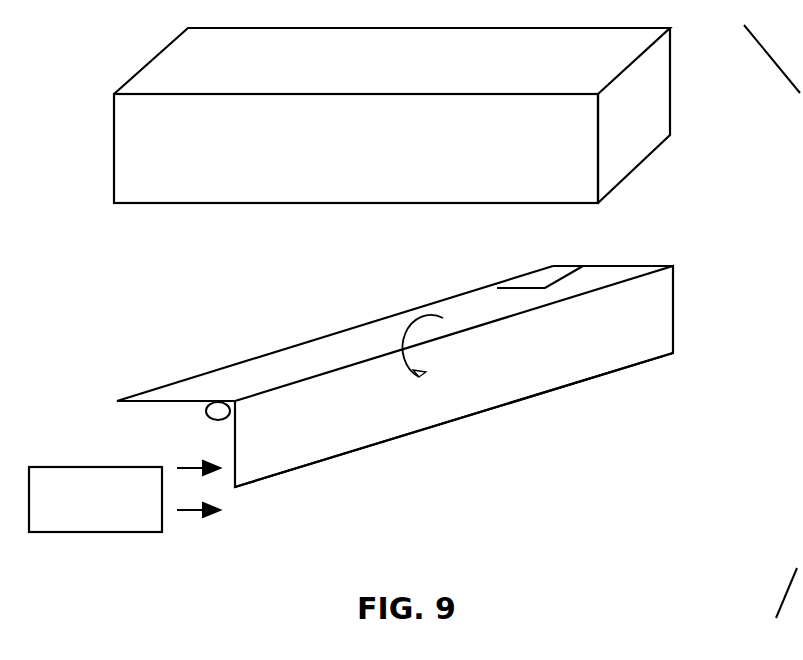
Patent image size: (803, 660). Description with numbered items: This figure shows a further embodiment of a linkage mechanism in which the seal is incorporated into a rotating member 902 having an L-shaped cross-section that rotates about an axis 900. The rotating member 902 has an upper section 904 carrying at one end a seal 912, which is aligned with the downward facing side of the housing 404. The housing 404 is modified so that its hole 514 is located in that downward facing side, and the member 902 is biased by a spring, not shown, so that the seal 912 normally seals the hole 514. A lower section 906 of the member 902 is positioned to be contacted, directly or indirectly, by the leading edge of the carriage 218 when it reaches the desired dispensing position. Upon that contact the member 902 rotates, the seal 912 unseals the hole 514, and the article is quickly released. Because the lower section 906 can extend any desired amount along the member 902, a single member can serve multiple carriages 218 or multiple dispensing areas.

The housing 404 is at (183, 203).
The hole 514 is at (583, 157).
The rotating member 902 is at (454, 376).
The upper section 904 is at (278, 352).
The lower section 906 is at (290, 468).
The seal 912 is at (576, 280).
The axis 900 is at (214, 418).
The carriage 218 is at (116, 533).